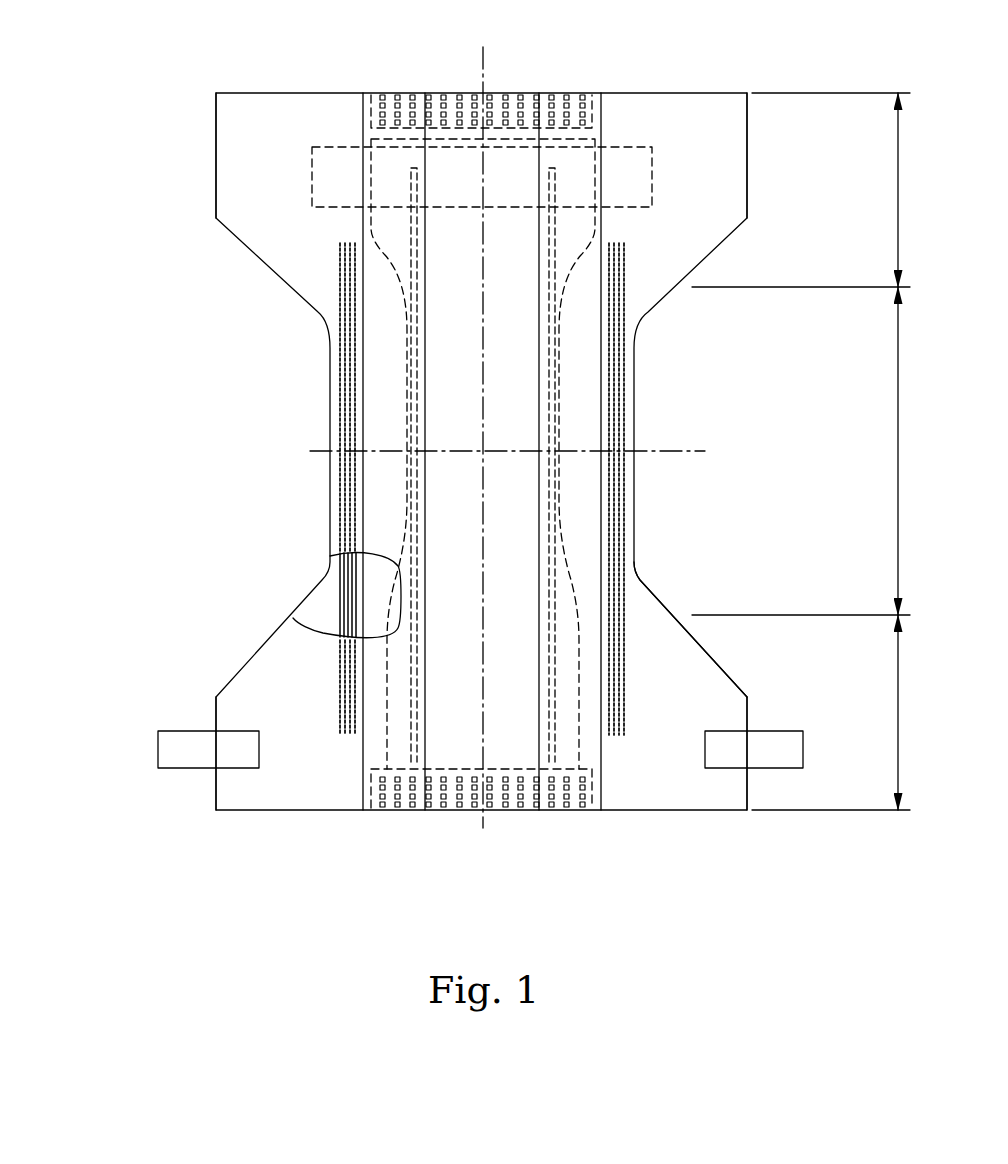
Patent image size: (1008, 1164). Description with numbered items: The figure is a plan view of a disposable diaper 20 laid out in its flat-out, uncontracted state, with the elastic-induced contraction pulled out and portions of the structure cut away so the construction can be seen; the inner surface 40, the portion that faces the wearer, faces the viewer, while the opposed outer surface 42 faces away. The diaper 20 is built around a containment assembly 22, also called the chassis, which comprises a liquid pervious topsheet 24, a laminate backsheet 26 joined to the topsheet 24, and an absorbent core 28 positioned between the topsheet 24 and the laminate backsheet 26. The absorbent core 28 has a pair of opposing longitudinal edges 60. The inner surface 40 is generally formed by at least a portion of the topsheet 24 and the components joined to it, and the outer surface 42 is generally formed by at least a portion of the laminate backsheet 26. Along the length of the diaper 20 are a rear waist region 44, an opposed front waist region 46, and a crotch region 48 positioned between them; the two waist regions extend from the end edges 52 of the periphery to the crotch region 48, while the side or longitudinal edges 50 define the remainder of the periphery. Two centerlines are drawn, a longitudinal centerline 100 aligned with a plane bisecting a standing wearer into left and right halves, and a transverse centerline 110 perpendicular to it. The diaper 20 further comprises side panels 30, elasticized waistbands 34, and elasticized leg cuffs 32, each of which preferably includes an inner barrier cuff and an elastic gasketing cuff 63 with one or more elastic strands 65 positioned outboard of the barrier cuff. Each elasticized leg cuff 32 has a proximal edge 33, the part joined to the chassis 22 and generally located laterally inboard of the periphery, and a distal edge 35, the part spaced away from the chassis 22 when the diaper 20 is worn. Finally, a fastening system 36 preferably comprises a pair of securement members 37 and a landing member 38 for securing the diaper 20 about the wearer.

The diaper 20 is at (186, 88).
The containment assembly 22 is at (469, 249).
The topsheet 24 is at (512, 343).
The laminate backsheet 26 is at (313, 617).
The absorbent core 28 is at (352, 590).
The side panels 30 is at (278, 118).
The elasticized leg cuff 32 is at (588, 635).
The proximal edge 33 is at (362, 760).
The elasticized waistbands 34 is at (570, 93).
The distal edge 35 is at (427, 735).
The fastening system 36 is at (165, 780).
The securement members 37 is at (775, 745).
The landing member 38 is at (652, 168).
The inner surface 40 is at (507, 434).
The outer surface 42 is at (337, 420).
The rear waist region 44 is at (898, 697).
The front waist region 46 is at (898, 192).
The crotch region 48 is at (898, 450).
The longitudinal edges 50 is at (330, 355).
The end edges 52 is at (435, 92).
The longitudinal edges 60 is at (388, 612).
The elastic gasketing cuff 63 is at (625, 537).
The elastic strands 65 is at (397, 585).
The longitudinal centerline 100 is at (483, 58).
The transverse centerline 110 is at (695, 452).